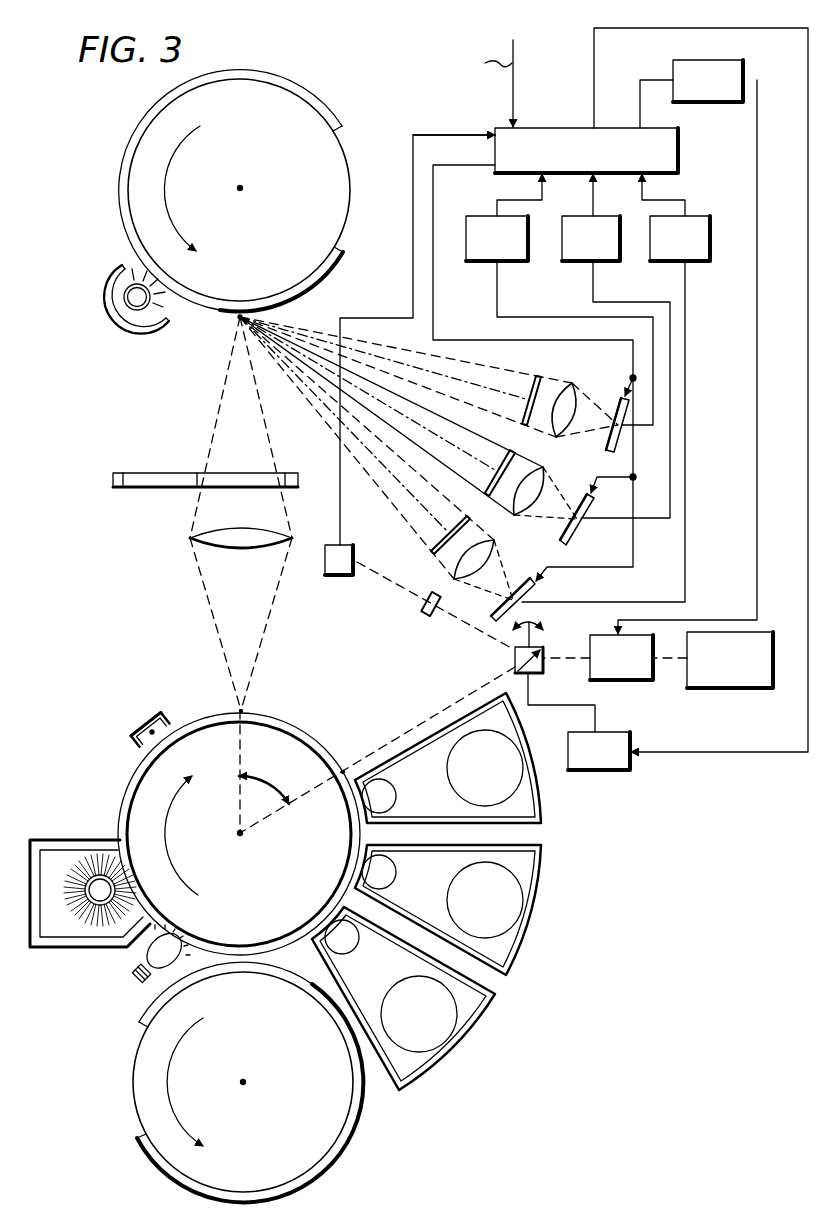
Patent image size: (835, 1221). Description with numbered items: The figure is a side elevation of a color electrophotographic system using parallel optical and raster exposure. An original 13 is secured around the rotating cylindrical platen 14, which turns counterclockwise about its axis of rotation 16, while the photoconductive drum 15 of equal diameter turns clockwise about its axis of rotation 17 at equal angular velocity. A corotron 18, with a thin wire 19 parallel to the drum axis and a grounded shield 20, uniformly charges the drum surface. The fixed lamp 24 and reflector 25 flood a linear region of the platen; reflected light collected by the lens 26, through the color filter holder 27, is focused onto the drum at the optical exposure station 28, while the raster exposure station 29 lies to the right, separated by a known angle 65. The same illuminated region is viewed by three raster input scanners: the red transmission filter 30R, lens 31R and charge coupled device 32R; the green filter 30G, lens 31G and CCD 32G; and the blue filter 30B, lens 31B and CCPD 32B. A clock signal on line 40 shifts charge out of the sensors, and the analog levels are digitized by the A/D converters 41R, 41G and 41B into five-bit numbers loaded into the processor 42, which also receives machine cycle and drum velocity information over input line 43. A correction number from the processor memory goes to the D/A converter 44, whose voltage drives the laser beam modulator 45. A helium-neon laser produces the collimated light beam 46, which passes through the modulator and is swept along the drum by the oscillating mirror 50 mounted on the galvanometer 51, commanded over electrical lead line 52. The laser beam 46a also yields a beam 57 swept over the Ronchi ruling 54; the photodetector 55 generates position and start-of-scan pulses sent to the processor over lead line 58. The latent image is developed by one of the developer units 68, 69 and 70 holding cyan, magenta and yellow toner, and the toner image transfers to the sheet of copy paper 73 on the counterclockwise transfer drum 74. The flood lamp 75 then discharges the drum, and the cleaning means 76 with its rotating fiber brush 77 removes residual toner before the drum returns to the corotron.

The original 13 is at (125, 153).
The rotating cylindrical platen 14 is at (344, 184).
The axis of rotation of platen 16 is at (242, 189).
The lamp 24 is at (121, 291).
The reflector 25 is at (150, 330).
The lens 26 is at (257, 554).
The color filter holder 27 is at (147, 472).
The optical exposure station 28 is at (244, 712).
The raster exposure station 29 is at (348, 768).
The red transmission filter 30R is at (523, 398).
The green filter 30G is at (495, 475).
The blue filter 30B is at (441, 530).
The lens 31R is at (573, 391).
The lens 31G is at (546, 480).
The lens 31B is at (464, 585).
The charge coupled device 32R is at (606, 442).
The charge coupled device 32G is at (563, 530).
The charge coupled photodiode device 32B is at (531, 577).
The clock line 40 is at (483, 336).
The red analog to digital converter 41R is at (489, 262).
The green analog to digital converter 41G is at (577, 262).
The blue analog to digital converter 41B is at (666, 262).
The processor 42 is at (571, 128).
The input line 43 is at (516, 100).
The digital to analog converter 44 is at (673, 70).
The laser beam modulator 45 is at (622, 681).
The collimated light beam 46 is at (425, 720).
The laser beam 46a is at (670, 660).
The oscillating mirror 50 is at (542, 646).
The galvanometer 51 is at (621, 771).
The electrical lead line 52 is at (735, 752).
The Ronchi ruling 54 is at (420, 613).
The photodetector 55 is at (347, 577).
The beam 57 is at (398, 600).
The lead line 58 is at (340, 502).
The photoconductive drum 15 is at (121, 808).
The axis of rotation of drum 17 is at (240, 836).
The corotron 18 is at (157, 703).
The thin wire 19 is at (168, 714).
The shield 20 is at (131, 744).
The angle 65 is at (265, 782).
The developer unit 68 is at (548, 810).
The developer unit 69 is at (534, 936).
The developer unit 70 is at (480, 1040).
The sheet of copy paper 73 is at (356, 1138).
The transfer drum 74 is at (128, 1075).
The flood lamp 75 is at (143, 975).
The cleaning means 76 is at (92, 954).
The rotating fiber brush 77 is at (78, 862).